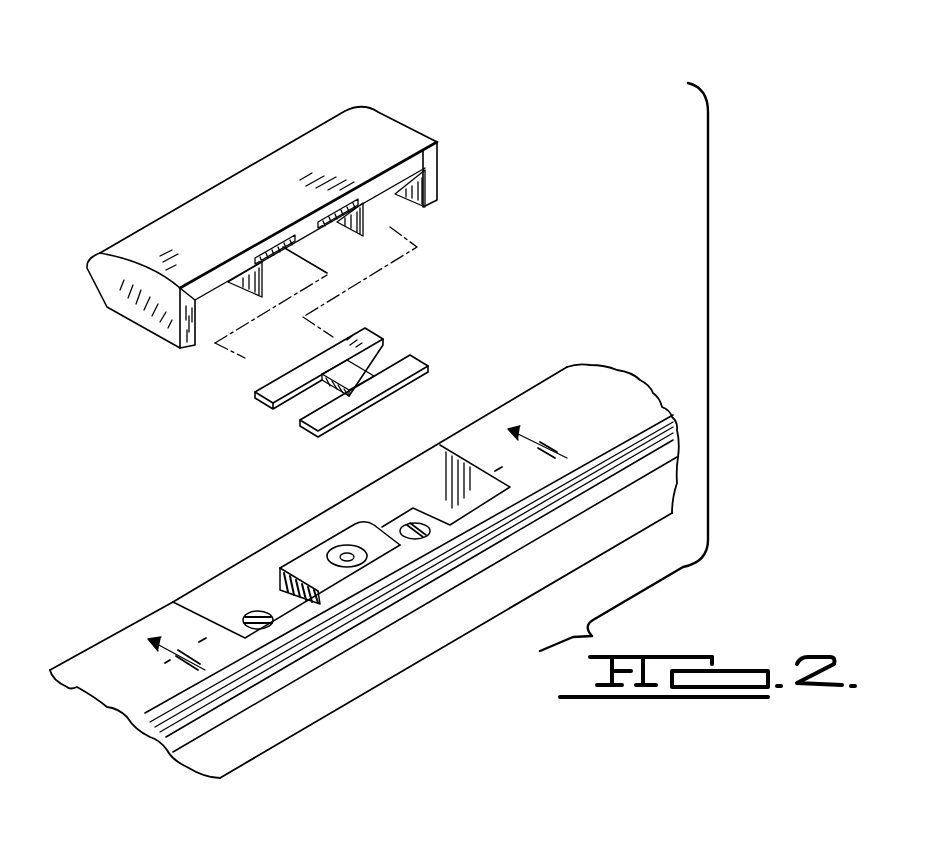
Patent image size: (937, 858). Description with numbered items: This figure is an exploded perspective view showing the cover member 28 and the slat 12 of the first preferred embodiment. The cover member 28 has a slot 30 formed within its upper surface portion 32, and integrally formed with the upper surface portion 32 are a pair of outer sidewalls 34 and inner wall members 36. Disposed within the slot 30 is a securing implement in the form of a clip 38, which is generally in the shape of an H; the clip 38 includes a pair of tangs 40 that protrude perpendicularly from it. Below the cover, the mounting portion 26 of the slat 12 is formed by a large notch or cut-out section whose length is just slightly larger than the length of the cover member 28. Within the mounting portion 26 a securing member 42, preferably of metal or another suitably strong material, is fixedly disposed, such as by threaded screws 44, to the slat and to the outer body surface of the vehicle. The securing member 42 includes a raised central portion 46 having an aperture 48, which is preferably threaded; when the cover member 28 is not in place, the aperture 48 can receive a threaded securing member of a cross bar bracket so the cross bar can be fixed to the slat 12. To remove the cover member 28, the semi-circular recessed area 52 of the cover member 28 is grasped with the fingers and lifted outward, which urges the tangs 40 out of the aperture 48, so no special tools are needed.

The slat 12 is at (364, 541).
The mounting portion 26 is at (222, 593).
The cover member 28 is at (273, 215).
The slot 30 is at (340, 215).
The upper surface portion 32 is at (328, 128).
The outer sidewalls 34 is at (437, 181).
The inner wall members 36 is at (360, 224).
The clip 38 is at (337, 375).
The tangs 40 is at (317, 401).
The securing member 42 is at (316, 532).
The threaded screws 44 is at (252, 612).
The raised central portion 46 is at (329, 513).
The aperture 48 is at (347, 552).
The semi-circular recessed area 52 is at (88, 279).